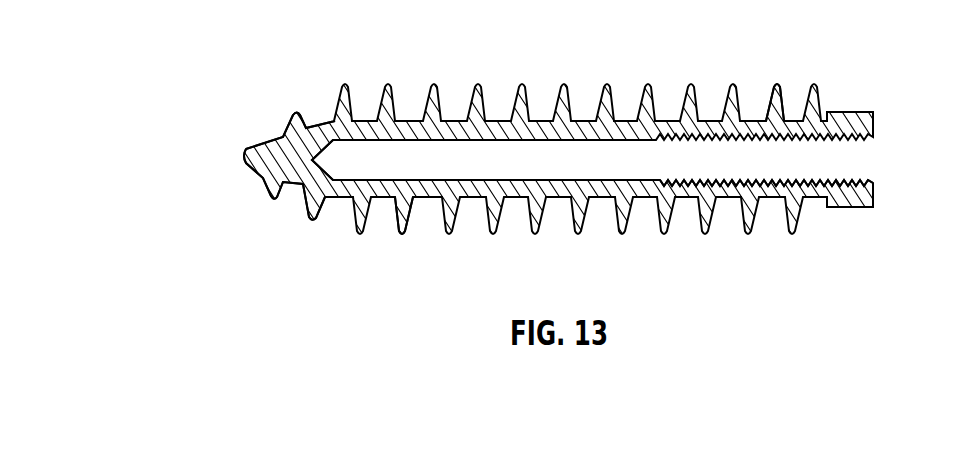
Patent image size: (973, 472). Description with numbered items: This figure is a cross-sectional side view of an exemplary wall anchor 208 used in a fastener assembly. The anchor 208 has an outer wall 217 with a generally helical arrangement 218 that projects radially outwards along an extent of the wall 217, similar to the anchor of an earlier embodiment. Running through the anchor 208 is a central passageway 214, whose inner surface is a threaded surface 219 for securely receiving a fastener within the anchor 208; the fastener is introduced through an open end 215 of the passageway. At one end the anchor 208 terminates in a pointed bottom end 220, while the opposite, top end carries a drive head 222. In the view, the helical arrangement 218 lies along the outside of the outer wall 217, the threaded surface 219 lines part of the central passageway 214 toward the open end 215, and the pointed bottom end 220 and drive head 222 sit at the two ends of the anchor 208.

The anchor 208 is at (485, 58).
The central passageway 214 is at (487, 153).
The open end 215 is at (855, 163).
The outer wall 217 is at (390, 197).
The helical arrangement 218 is at (779, 85).
The threaded surface 219 is at (737, 184).
The pointed bottom end 220 is at (247, 168).
The drive head 222 is at (858, 112).